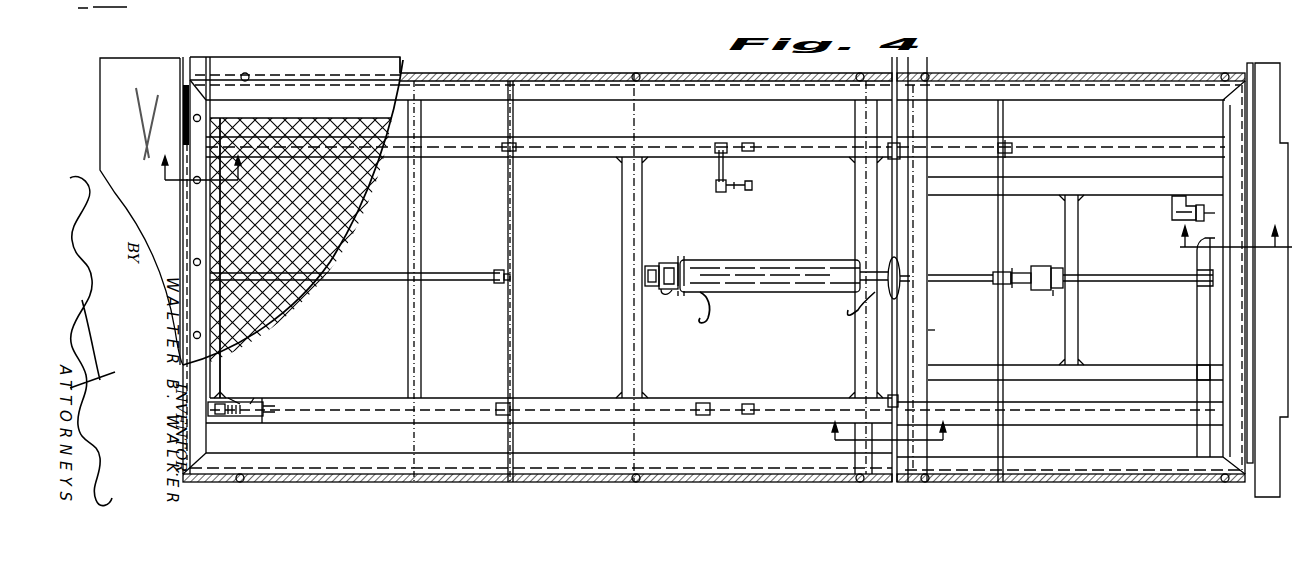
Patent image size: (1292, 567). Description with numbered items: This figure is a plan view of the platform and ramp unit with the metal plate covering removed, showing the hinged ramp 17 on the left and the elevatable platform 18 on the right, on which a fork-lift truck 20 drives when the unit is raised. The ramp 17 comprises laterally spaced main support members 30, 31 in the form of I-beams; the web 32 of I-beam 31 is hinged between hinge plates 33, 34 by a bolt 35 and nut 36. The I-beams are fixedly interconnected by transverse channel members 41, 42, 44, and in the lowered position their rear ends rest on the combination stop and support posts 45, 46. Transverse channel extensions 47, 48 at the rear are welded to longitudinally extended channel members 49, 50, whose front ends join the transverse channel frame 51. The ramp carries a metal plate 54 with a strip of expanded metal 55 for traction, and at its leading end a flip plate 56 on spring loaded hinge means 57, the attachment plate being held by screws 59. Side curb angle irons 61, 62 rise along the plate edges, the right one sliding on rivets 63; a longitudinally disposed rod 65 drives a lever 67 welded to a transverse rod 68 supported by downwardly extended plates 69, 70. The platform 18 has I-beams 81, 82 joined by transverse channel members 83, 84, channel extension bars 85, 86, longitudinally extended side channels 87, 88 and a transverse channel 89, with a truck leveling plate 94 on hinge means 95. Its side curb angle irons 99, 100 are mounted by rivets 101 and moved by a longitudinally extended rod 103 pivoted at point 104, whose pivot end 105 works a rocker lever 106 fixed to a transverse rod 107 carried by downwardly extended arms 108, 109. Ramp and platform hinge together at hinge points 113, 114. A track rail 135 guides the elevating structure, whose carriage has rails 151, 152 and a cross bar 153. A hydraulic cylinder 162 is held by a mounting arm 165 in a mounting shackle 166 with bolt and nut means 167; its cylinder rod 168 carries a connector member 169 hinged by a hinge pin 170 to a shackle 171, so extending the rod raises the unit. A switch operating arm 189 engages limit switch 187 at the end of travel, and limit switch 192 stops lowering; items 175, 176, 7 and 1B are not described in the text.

The hinged ramp 17 is at (337, 48).
The elevatable platform 18 is at (1088, 103).
The fork-lift truck 20 is at (192, 178).
The main support member 30 is at (586, 160).
The main support member 31 is at (580, 398).
The web 32 is at (322, 398).
The hinge plate 33 is at (265, 418).
The hinge plate 34 is at (262, 400).
The bolt 35 is at (240, 418).
The nut 36 is at (236, 400).
The transverse channel member 41 is at (222, 372).
The transverse channel member 42 is at (424, 330).
The transverse channel member 44 is at (858, 343).
The combination stop and support post 45 is at (717, 168).
The combination stop and support post 46 is at (702, 400).
The transverse channel extension 47 is at (855, 117).
The transverse channel extension 48 is at (858, 445).
The longitudinally extended channel member 49 is at (608, 96).
The longitudinally extended channel member 50 is at (573, 457).
The transverse channel frame 51 is at (207, 442).
The metal plate 54 is at (385, 117).
The strip of expanded metal 55 is at (335, 204).
The flip plate 56 is at (117, 70).
The spring loaded hinge means 57 is at (183, 88).
The screws 59 is at (201, 117).
The angle iron 61 is at (407, 55).
The angle iron 62 is at (311, 483).
The rivets 63 is at (250, 70).
The longitudinally disposed rod 65 is at (350, 282).
The lever 67 is at (513, 280).
The transverse rod 68 is at (514, 340).
The downwardly extended plate 69 is at (497, 158).
The downwardly extended plate 70 is at (500, 400).
The I-beam 81 is at (1149, 132).
The I-beam 82 is at (1143, 433).
The transverse channel member 83 is at (934, 330).
The transverse channel member 84 is at (1200, 325).
The channel extension bar 85 is at (930, 118).
The channel extension bar 86 is at (926, 470).
The longitudinally extended side channel 87 is at (1030, 96).
The longitudinally extended side channel 88 is at (1022, 462).
The transverse channel 89 is at (1224, 114).
The truck leveling plate 94 is at (1270, 63).
The hinge means 95 is at (1250, 63).
The side curb angle iron 99 is at (1040, 73).
The side curb angle iron 100 is at (1040, 484).
The rivets 101 is at (925, 73).
The longitudinally extended rod 103 is at (1118, 274).
The pivot point 104 is at (1211, 285).
The pivot end 105 is at (1016, 271).
The rocker lever 106 is at (996, 285).
The transverse rod 107 is at (998, 212).
The downwardly extended arm 108 is at (1012, 150).
The downwardly extended arm 109 is at (1040, 370).
The hinge point 113 is at (893, 142).
The hinge point 114 is at (896, 385).
The track rail 135 is at (748, 158).
The rail 151 is at (1120, 196).
The rail 152 is at (1090, 366).
The cross bar 153 is at (1080, 322).
The hydraulic cylinder 162 is at (780, 257).
The mounting arm 165 is at (668, 292).
The mounting shackle 166 is at (657, 258).
The bolt and nut means 167 is at (680, 262).
The cylinder rod 168 is at (968, 272).
The connector member 169 is at (1040, 266).
The hinge pin 170 is at (1046, 291).
The shackle 171 is at (1057, 300).
The hose 175 is at (710, 305).
The hose 176 is at (848, 314).
The limit switch 187 is at (1192, 242).
The switch operating arm 189 is at (1175, 210).
The limit switch 192 is at (714, 187).
The section indicator 7 is at (886, 440).
The section indicator 1B is at (1233, 254).